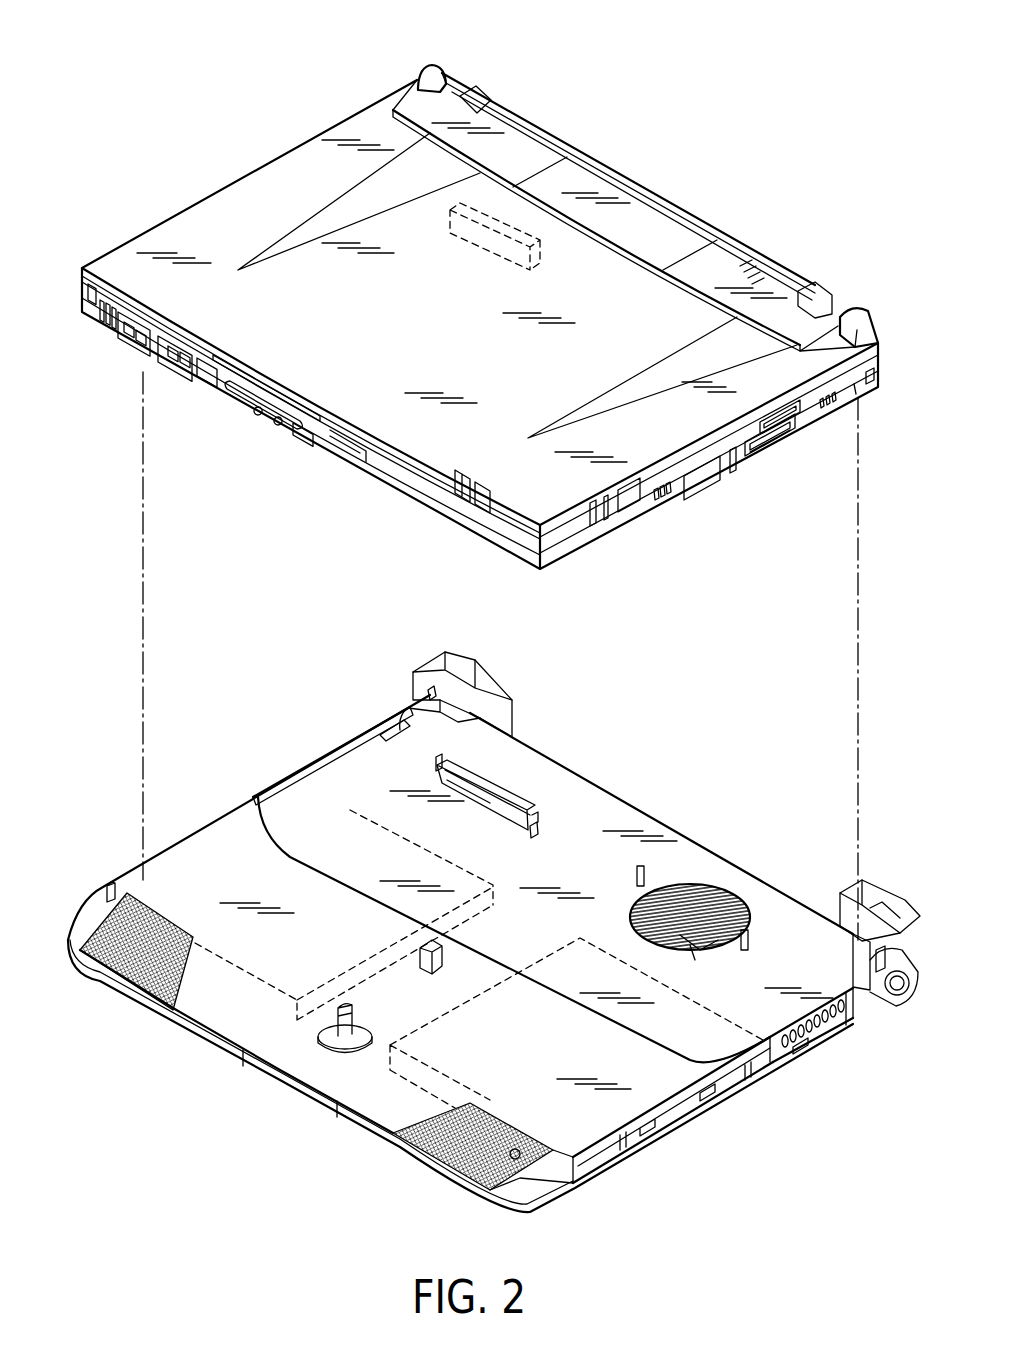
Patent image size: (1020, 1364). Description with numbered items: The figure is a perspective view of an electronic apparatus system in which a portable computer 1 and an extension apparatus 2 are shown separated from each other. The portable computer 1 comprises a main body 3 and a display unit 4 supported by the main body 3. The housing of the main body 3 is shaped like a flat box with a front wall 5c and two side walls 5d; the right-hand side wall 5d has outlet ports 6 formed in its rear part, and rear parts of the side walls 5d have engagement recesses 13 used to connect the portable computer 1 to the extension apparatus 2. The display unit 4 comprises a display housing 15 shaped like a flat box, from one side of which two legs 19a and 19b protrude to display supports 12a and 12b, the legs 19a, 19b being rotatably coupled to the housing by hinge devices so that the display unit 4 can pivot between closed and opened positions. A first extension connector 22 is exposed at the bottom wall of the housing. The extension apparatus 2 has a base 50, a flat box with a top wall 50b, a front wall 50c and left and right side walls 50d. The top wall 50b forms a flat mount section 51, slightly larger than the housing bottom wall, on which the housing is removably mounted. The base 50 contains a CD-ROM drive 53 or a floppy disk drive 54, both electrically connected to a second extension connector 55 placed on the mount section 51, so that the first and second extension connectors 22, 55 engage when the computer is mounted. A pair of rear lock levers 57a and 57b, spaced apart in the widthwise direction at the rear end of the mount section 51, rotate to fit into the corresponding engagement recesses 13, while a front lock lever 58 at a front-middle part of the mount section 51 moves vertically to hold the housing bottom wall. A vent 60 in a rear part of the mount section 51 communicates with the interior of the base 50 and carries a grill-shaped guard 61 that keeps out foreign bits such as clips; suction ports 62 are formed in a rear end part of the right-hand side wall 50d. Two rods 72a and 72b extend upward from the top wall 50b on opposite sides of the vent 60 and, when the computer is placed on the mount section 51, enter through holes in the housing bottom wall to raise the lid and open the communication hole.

The portable computer 1 is at (255, 161).
The extension apparatus 2 is at (655, 813).
The main body 3 is at (592, 545).
The display unit 4 is at (360, 414).
The front wall 5c is at (412, 503).
The side wall 5d is at (707, 455).
The outlet ports 6 is at (767, 432).
The display support 12a is at (442, 70).
The display support 12b is at (863, 320).
The engagement recess 13 is at (871, 375).
The display housing 15 is at (190, 226).
The leg 19a is at (470, 90).
The leg 19b is at (830, 296).
The first extension connector 22 is at (483, 252).
The base 50 is at (338, 1112).
The top wall 50b is at (299, 806).
The front wall 50c is at (243, 1066).
The side wall 50d is at (845, 1026).
The mount section 51 is at (479, 959).
The CD-ROM drive 53 is at (648, 1132).
The floppy disk drive 54 is at (220, 852).
The second extension connector 55 is at (490, 788).
The rear lock lever 57a is at (470, 662).
The rear lock lever 57b is at (898, 903).
The front lock lever 58 is at (356, 1020).
The vent 60 is at (740, 905).
The grill-shaped guard 61 is at (728, 955).
The suction ports 62 is at (820, 1050).
The rod 72a is at (634, 874).
The rod 72b is at (752, 940).